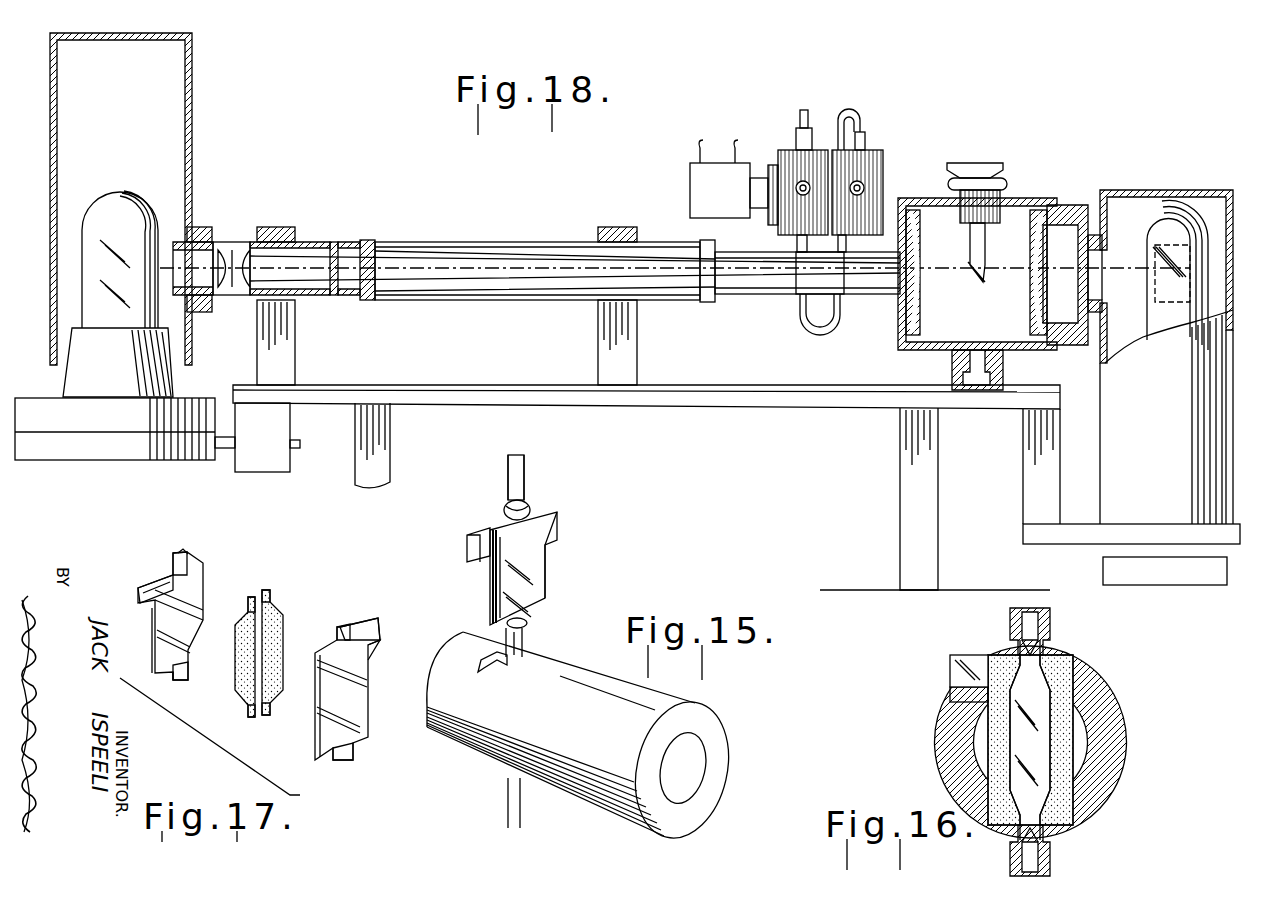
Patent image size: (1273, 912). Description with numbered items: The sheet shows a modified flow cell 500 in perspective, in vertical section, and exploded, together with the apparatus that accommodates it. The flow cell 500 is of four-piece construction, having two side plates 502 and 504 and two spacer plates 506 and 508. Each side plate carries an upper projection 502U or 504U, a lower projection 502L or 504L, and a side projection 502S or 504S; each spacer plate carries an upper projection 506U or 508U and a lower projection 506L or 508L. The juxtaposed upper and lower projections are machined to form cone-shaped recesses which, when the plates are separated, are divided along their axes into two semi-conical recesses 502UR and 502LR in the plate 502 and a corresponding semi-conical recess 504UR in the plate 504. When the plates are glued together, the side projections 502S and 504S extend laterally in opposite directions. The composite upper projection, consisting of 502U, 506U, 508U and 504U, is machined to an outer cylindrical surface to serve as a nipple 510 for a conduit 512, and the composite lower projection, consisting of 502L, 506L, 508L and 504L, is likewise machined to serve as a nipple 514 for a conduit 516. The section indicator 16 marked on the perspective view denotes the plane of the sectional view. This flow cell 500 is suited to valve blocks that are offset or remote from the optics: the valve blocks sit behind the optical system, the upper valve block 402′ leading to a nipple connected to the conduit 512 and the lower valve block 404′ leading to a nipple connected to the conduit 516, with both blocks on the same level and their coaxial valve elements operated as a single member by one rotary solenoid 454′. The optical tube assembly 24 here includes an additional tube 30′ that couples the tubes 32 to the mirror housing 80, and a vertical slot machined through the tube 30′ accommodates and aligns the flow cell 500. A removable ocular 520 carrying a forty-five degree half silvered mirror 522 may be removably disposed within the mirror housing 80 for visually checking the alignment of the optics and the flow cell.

In FIG. 18, the optical tube assembly 24 is at (505, 230).
In FIG. 18, the tubes 32 is at (642, 304).
In FIG. 18, the mirror housing 80 is at (1040, 184).
In FIG. 18, the rotary solenoid 454′ is at (697, 178).
In FIG. 18, the upper valve block 402′ is at (780, 160).
In FIG. 18, the lower valve block 404′ is at (878, 158).
In FIG. 18, the conduit 512 is at (790, 240).
In FIG. 15, the conduit 512 is at (527, 486).
In FIG. 16, the conduit 512 is at (1052, 622).
In FIG. 18, the conduit 516 is at (800, 324).
In FIG. 15, the conduit 516 is at (527, 640).
In FIG. 16, the conduit 516 is at (1052, 858).
In FIG. 18, the flow cell 500 is at (786, 284).
In FIG. 15, the flow cell 500 is at (573, 578).
In FIG. 18, the additional tube 30′ is at (876, 300).
In FIG. 15, the additional tube 30′ is at (587, 797).
In FIG. 16, the additional tube 30′ is at (1108, 783).
In FIG. 18, the removable ocular 520 is at (1000, 168).
In FIG. 18, the half silvered mirror 522 is at (978, 284).
In FIG. 15, the flow line 16 is at (506, 440).
In FIG. 15, the nipple 510 is at (527, 522).
In FIG. 15, the nipple 514 is at (530, 616).
In FIG. 15, the side projection 502S is at (470, 535).
In FIG. 16, the side projection 502S is at (960, 662).
In FIG. 17, the side projection 502S is at (140, 590).
In FIG. 15, the side projection 504S is at (560, 520).
In FIG. 17, the side projection 504S is at (368, 658).
In FIG. 17, the side plate 502 is at (155, 627).
In FIG. 17, the upper projection 502U is at (180, 553).
In FIG. 17, the semi-conical recess 502UR is at (185, 556).
In FIG. 17, the lower projection 502L is at (160, 683).
In FIG. 17, the semi-conical recess 502LR is at (177, 673).
In FIG. 17, the side plate 504 is at (316, 760).
In FIG. 17, the upper projection 504U is at (384, 643).
In FIG. 17, the semi-conical recess 504UR is at (340, 623).
In FIG. 17, the lower projection 504L is at (353, 745).
In FIG. 16, the spacer plate 506 is at (992, 700).
In FIG. 17, the spacer plate 506 is at (238, 666).
In FIG. 17, the upper projection 506U is at (252, 595).
In FIG. 17, the lower projection 506L is at (252, 720).
In FIG. 16, the spacer plate 508 is at (1065, 685).
In FIG. 17, the spacer plate 508 is at (300, 620).
In FIG. 17, the upper projection 508U is at (264, 592).
In FIG. 17, the lower projection 508L is at (268, 722).